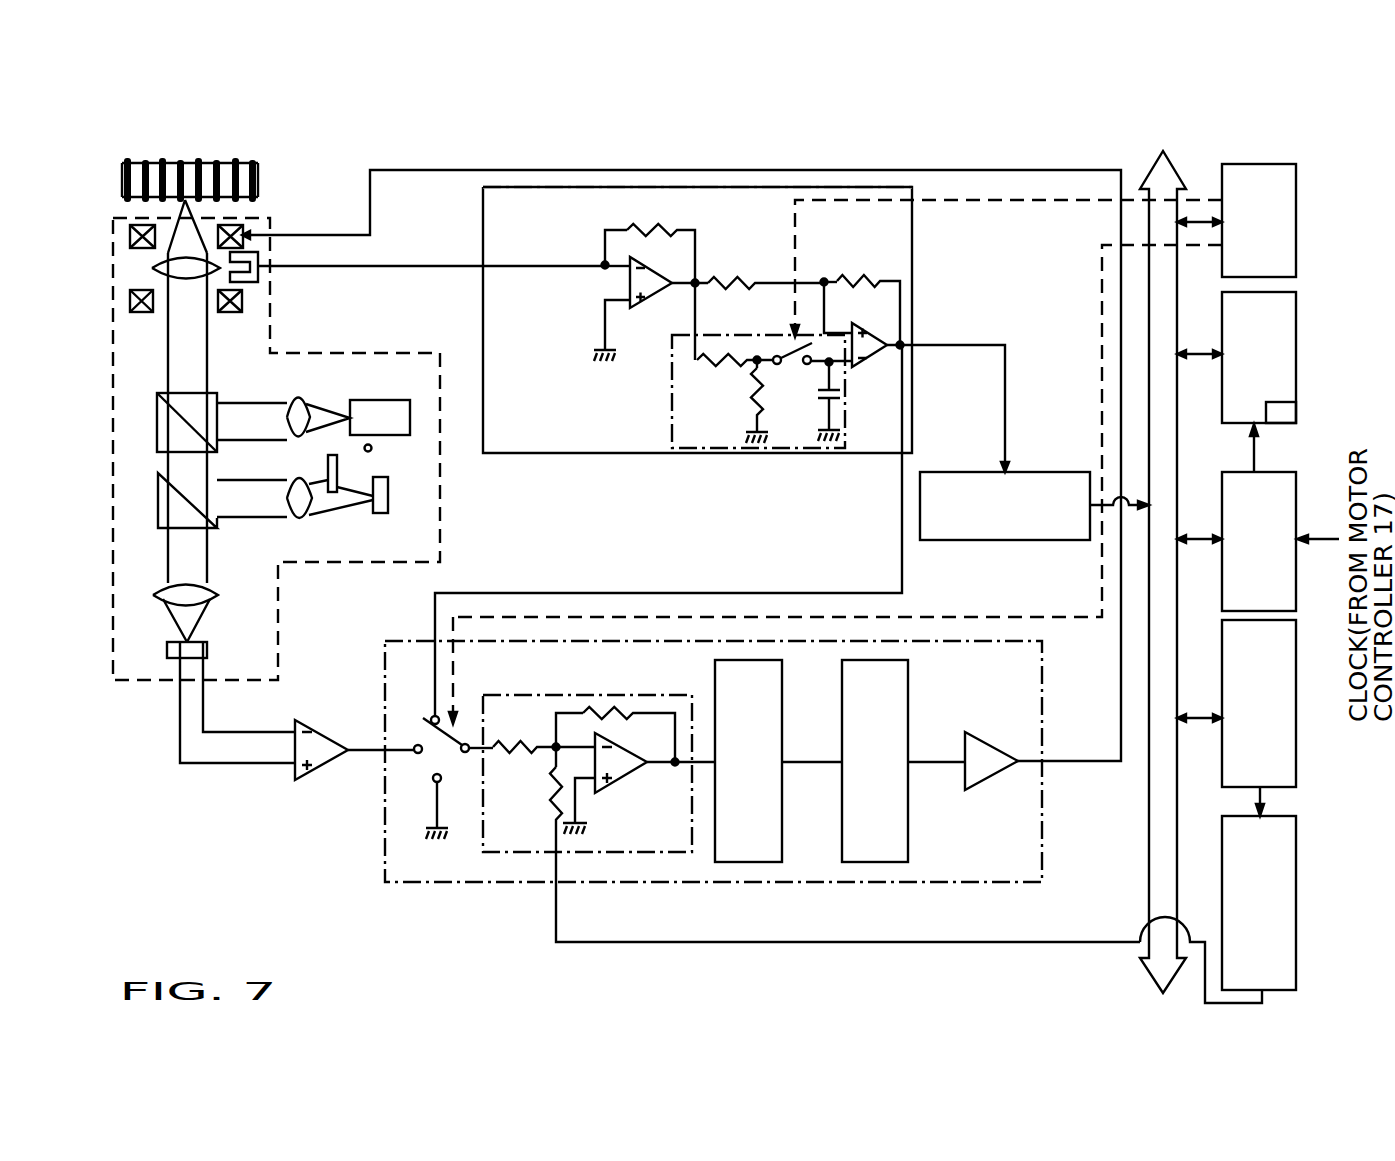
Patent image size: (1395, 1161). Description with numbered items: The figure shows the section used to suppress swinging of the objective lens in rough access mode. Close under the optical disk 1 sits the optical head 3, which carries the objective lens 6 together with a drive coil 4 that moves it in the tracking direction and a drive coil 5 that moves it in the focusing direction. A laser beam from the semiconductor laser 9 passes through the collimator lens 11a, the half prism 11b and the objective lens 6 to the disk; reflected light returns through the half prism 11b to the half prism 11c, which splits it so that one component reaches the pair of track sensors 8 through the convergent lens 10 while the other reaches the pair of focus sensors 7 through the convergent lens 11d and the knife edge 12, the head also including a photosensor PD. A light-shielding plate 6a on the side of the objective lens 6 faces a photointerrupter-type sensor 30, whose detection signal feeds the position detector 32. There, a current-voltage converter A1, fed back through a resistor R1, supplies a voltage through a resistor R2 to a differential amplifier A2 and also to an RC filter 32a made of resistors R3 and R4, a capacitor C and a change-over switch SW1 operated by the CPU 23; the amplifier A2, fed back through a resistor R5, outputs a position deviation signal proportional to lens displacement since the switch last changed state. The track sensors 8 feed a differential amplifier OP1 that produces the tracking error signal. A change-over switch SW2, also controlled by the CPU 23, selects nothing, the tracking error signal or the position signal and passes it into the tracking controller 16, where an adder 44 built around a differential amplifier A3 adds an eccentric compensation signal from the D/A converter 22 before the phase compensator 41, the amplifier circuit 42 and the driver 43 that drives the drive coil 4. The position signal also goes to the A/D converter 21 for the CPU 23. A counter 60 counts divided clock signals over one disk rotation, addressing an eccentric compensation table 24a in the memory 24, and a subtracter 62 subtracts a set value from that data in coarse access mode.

The optical disk 1 is at (122, 178).
The optical head 3 is at (310, 353).
The drive coil 4 is at (130, 237).
The drive coil 5 is at (130, 301).
The objective lens 6 is at (187, 278).
The light-shielding plate 6a is at (226, 270).
The sensor 30 is at (258, 257).
The focus sensors 7 is at (388, 510).
The track sensors 8 is at (207, 650).
The semiconductor laser 9 is at (387, 401).
The convergent lens 10 is at (220, 593).
The collimator lens 11a is at (305, 401).
The half prism 11b is at (157, 407).
The half prism 11c is at (161, 526).
The convergent lens 11d is at (308, 527).
The knife edge 12 is at (337, 480).
The photosensor PD is at (372, 448).
The differential amplifier OP1 is at (318, 730).
The change-over switch SW1 is at (787, 338).
The change-over switch SW2 is at (465, 733).
The tracking controller 16 is at (1043, 838).
The A/D converter 21 is at (1040, 467).
The D/A converter 22 is at (1220, 642).
The CPU 23 is at (1300, 218).
The memory 24 is at (1297, 325).
The eccentric compensation table 24a is at (1290, 412).
The position detector 32 is at (746, 329).
The RC filter 32a is at (720, 365).
The phase compensator 41 is at (782, 710).
The amplifier circuit 42 is at (910, 695).
The driver 43 is at (994, 739).
The adder 44 is at (795, 818).
The counter 60 is at (1222, 483).
The subtracter 62 is at (1220, 832).
The current-voltage converter A1 is at (645, 308).
The differential amplifier A2 is at (867, 367).
The differential amplifier A3 is at (633, 780).
The resistor R1 is at (660, 225).
The resistor R2 is at (740, 272).
The resistor R3 is at (720, 367).
The resistor R4 is at (752, 408).
The resistor R5 is at (864, 273).
The capacitor C is at (813, 398).